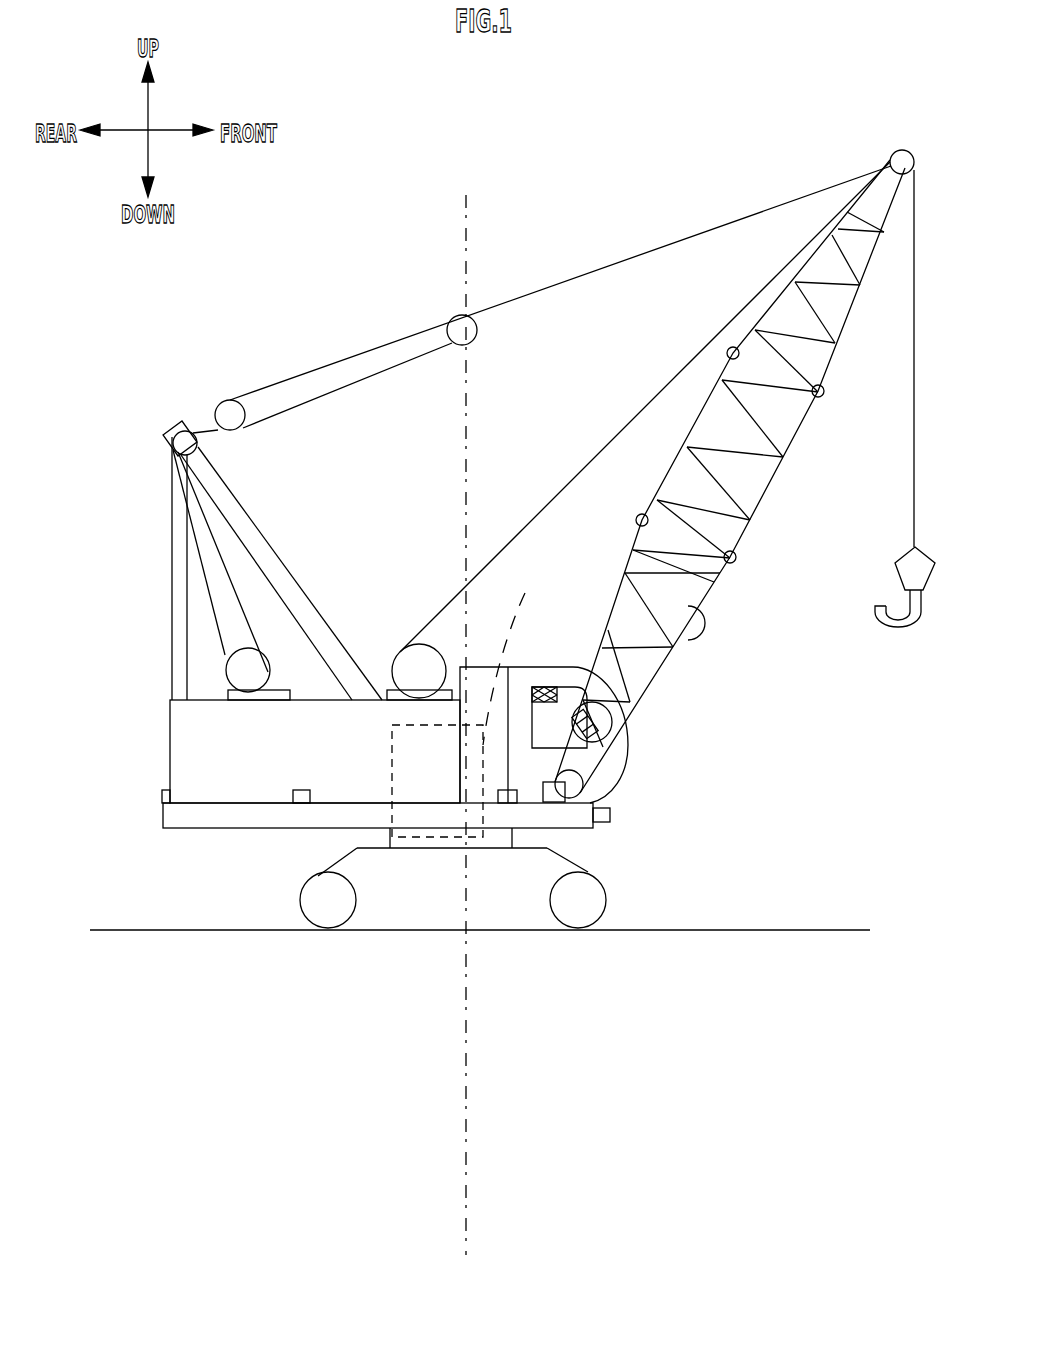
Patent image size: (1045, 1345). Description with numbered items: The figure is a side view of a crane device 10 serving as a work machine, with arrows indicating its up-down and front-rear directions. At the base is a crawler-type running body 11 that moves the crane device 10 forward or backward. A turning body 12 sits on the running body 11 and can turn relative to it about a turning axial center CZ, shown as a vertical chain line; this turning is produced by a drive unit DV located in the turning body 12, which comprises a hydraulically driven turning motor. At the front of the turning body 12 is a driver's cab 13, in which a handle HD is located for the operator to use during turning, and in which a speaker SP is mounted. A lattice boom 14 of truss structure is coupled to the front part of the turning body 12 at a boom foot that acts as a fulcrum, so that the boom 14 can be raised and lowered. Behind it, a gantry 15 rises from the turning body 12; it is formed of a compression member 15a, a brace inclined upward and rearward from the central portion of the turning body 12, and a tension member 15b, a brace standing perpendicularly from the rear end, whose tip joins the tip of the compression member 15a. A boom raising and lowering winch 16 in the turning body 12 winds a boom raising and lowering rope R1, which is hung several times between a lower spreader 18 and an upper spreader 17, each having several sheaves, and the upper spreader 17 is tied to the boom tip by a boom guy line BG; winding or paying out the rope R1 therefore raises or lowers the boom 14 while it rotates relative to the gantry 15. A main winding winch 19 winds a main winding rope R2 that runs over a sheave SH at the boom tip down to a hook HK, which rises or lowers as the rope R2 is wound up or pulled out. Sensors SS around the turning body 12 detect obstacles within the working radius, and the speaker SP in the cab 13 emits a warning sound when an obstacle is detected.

The crane device 10 is at (741, 182).
The running body 11 is at (340, 870).
The turning body 12 is at (193, 772).
The driver's cab 13 is at (607, 777).
The boom 14 is at (693, 640).
The gantry 15 is at (207, 560).
The compression member 15a is at (232, 512).
The tension member 15b is at (175, 557).
The boom raising and lowering winch 16 is at (247, 675).
The upper spreader 17 is at (455, 325).
The lower spreader 18 is at (229, 400).
The main winding winch 19 is at (420, 670).
The boom guy line BG is at (647, 257).
The turning axial center CZ is at (468, 703).
The drive unit DV is at (517, 656).
The handle HD is at (590, 747).
The hook HK is at (903, 630).
The boom raising and lowering rope R1 is at (215, 630).
The main winding rope R2 is at (655, 395).
The sheave SH is at (900, 150).
The speaker SP is at (555, 687).
The sensors SS is at (163, 803).